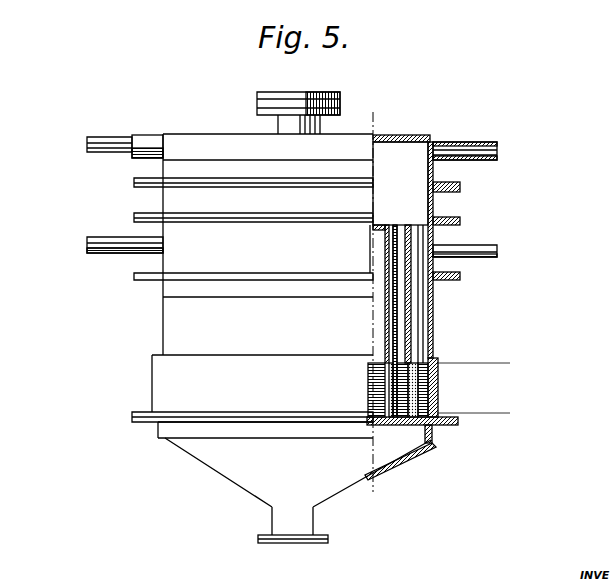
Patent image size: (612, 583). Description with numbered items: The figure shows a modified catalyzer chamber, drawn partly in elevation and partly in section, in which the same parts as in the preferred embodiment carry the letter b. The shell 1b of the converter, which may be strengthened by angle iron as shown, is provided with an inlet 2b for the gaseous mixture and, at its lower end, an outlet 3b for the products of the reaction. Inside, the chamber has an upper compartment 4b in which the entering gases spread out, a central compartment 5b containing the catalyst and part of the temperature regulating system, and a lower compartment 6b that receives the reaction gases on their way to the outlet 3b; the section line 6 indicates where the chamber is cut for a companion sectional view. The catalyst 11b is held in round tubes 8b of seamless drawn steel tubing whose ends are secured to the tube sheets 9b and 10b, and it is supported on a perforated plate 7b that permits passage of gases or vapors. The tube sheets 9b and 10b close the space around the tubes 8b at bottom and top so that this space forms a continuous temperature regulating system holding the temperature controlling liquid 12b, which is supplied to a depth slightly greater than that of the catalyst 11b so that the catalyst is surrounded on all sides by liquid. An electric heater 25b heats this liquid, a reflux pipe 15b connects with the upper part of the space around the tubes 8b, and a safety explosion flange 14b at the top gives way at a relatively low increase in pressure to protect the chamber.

The shell 1b is at (170, 326).
The inlet 2b is at (88, 147).
The outlet 3b is at (297, 545).
The upper compartment 4b is at (401, 180).
The central compartment 5b is at (434, 265).
The lower compartment 6 is at (118, 198).
The lower compartment 6b is at (372, 447).
The perforated plate 7b is at (388, 427).
The round tubes 8b is at (413, 313).
The tube sheet 9b is at (438, 408).
The tube sheet 10b is at (372, 231).
The catalyst 11b is at (417, 366).
The temperature controlling liquid 12b is at (375, 362).
The safety explosion flange 14b is at (336, 100).
The reflux pipe 15b is at (106, 235).
The electric heater 25b is at (438, 379).